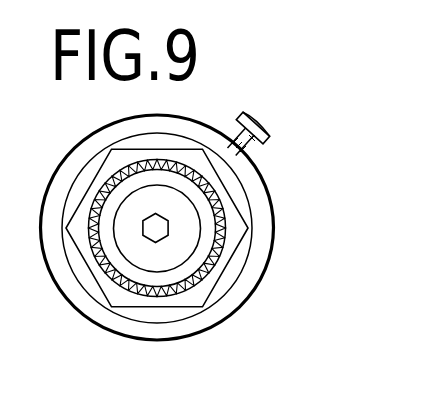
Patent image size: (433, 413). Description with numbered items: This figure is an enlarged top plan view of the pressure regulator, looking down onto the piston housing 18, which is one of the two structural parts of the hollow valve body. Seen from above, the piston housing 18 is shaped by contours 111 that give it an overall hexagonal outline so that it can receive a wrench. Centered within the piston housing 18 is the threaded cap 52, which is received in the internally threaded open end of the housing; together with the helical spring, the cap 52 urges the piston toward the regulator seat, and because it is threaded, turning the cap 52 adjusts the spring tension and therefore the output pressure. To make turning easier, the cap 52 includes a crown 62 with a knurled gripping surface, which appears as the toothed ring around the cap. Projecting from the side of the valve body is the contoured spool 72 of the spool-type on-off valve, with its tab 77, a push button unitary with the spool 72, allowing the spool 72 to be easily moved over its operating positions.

The piston housing 18 is at (215, 308).
The contours 111 is at (104, 175).
The crown 62 is at (207, 252).
The threaded cap 52 is at (134, 251).
The spool 72 is at (279, 123).
The tab 77 is at (259, 119).